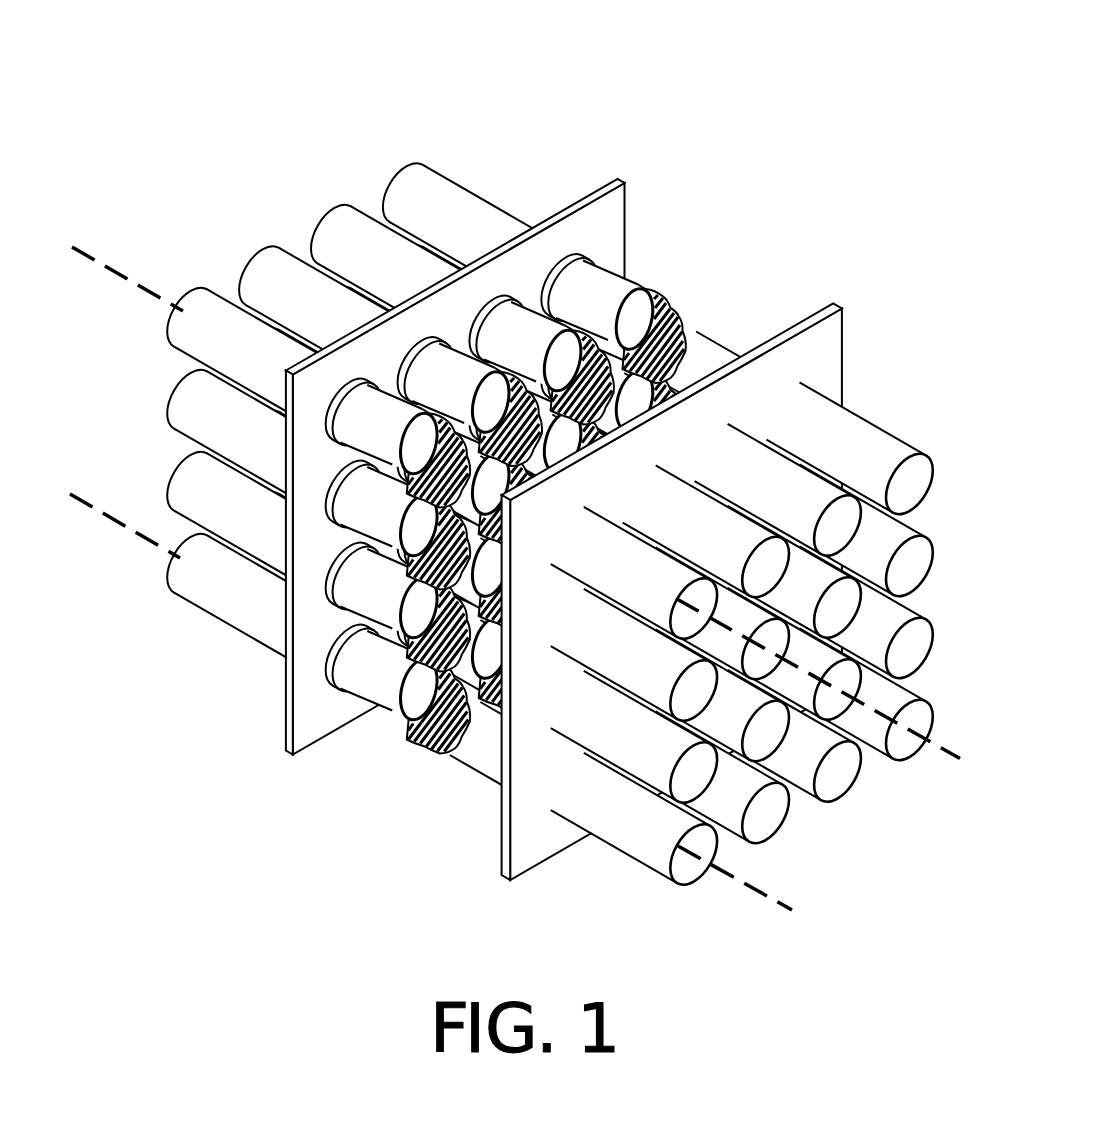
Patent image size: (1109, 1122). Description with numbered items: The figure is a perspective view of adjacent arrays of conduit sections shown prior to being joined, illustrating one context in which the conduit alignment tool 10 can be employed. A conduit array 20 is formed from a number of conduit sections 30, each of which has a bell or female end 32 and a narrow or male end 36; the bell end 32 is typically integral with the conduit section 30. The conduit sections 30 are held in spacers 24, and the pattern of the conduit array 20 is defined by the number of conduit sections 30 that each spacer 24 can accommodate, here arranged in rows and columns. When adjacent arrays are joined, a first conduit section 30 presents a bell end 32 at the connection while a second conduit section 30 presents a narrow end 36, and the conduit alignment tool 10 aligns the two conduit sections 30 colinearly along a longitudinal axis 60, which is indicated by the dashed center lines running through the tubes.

The conduit alignment tool 10 is at (635, 272).
The conduit array 20 is at (529, 478).
The spacer 24 is at (599, 493).
The conduit section 30 is at (563, 509).
The bell end 32 is at (603, 262).
The narrow end 36 is at (727, 333).
The longitudinal axis 60 is at (133, 274).